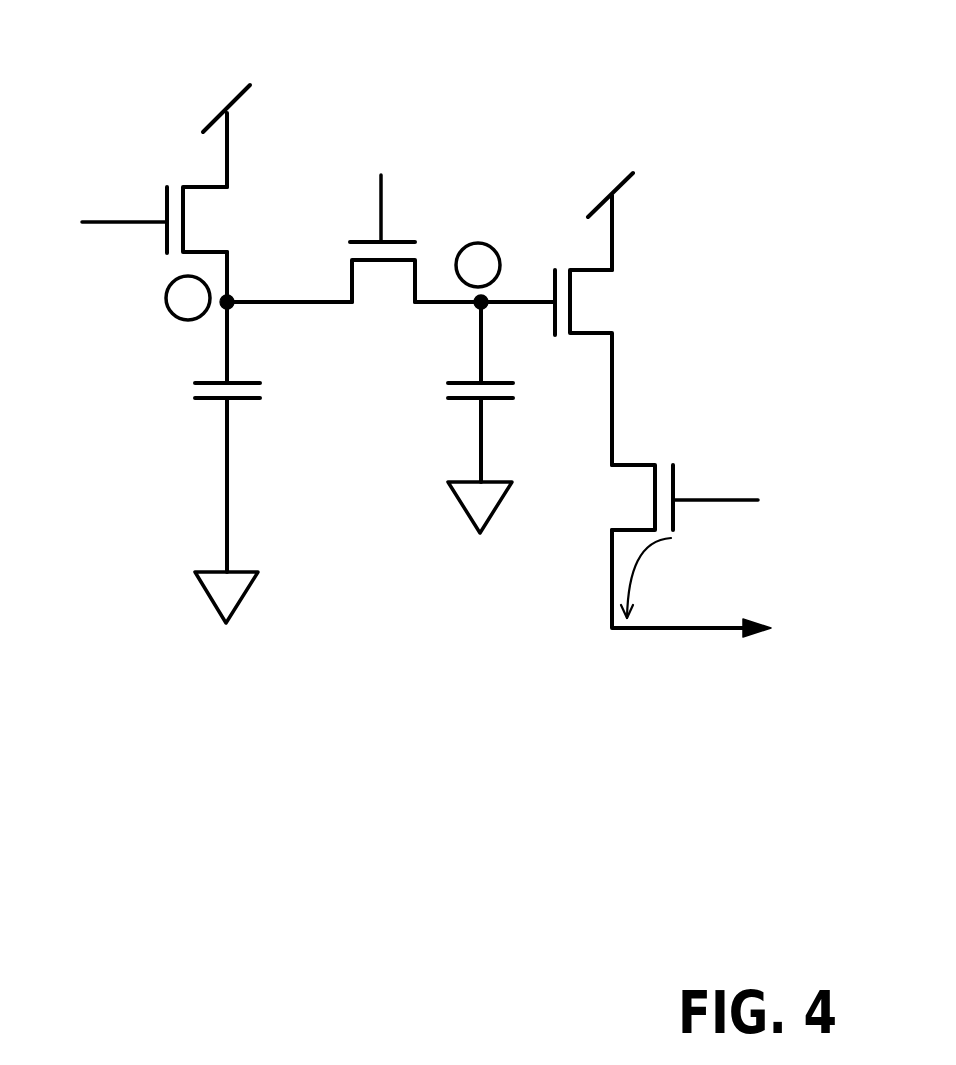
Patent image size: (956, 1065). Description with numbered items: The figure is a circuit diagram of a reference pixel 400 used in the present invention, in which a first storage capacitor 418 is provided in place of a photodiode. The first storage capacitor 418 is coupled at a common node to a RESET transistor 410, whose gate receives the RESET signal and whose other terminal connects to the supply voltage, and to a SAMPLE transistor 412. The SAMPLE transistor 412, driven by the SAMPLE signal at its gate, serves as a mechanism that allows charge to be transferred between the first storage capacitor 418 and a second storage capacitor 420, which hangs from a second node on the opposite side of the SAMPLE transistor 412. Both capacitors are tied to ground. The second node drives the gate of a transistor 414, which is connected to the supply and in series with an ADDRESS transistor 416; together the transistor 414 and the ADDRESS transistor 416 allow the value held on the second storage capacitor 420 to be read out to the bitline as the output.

The reference pixel 400 is at (580, 90).
The RESET transistor 410 is at (217, 225).
The SAMPLE transistor 412 is at (375, 298).
The transistor 414 is at (600, 302).
The ADDRESS transistor 416 is at (615, 498).
The first storage capacitor 418 is at (205, 402).
The second storage capacitor 420 is at (498, 380).